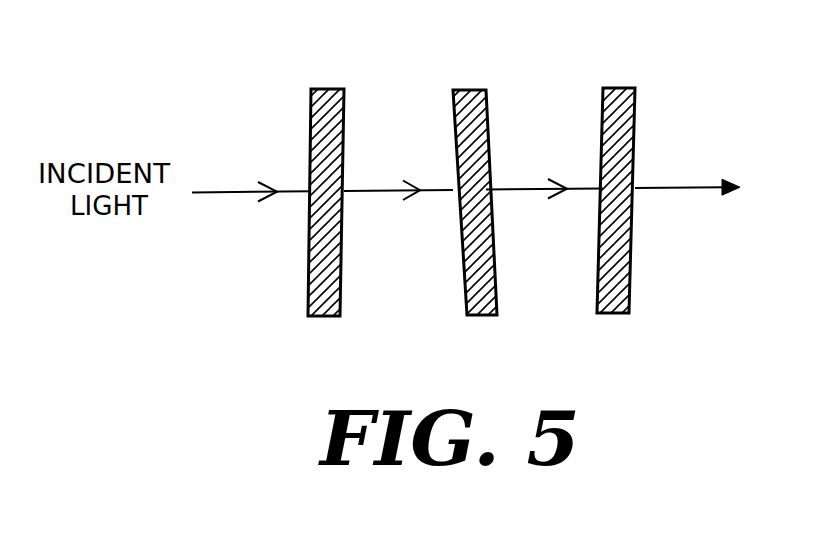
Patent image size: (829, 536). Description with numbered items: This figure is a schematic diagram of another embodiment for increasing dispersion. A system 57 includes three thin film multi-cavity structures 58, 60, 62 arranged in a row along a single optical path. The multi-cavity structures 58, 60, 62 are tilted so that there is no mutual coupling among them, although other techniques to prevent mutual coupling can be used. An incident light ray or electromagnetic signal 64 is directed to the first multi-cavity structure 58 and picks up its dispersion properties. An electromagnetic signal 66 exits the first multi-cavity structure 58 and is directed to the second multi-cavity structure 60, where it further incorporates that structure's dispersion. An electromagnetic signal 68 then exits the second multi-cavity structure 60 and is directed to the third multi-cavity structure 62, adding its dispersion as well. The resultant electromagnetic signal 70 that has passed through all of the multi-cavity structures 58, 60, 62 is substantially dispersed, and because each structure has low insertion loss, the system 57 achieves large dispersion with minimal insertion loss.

The system 57 is at (390, 250).
The first multi-cavity structure 58 is at (307, 275).
The second multi-cavity structure 60 is at (463, 275).
The third multi-cavity structure 62 is at (597, 275).
The incident light ray 64 is at (233, 193).
The electromagnetic signal 66 is at (385, 192).
The electromagnetic signal 68 is at (528, 191).
The resultant electromagnetic signal 70 is at (675, 189).